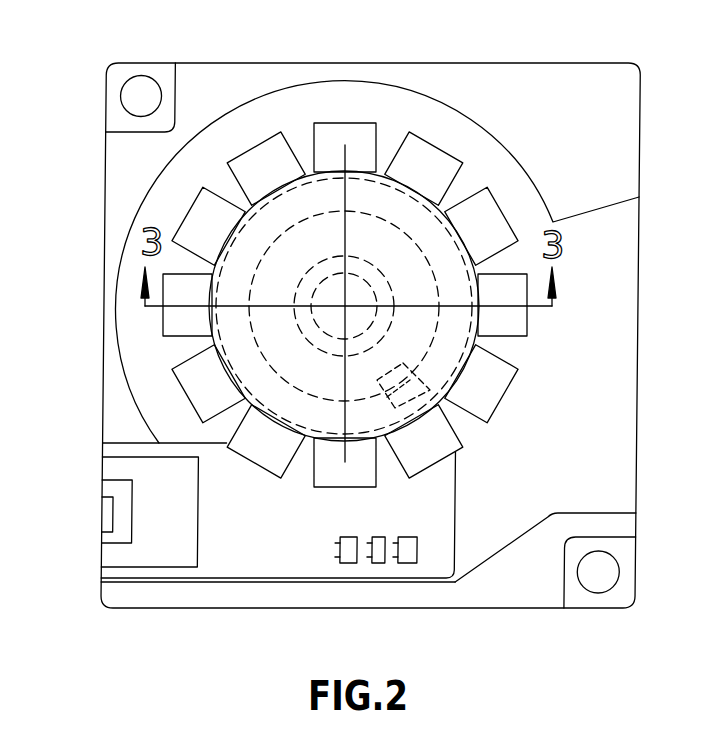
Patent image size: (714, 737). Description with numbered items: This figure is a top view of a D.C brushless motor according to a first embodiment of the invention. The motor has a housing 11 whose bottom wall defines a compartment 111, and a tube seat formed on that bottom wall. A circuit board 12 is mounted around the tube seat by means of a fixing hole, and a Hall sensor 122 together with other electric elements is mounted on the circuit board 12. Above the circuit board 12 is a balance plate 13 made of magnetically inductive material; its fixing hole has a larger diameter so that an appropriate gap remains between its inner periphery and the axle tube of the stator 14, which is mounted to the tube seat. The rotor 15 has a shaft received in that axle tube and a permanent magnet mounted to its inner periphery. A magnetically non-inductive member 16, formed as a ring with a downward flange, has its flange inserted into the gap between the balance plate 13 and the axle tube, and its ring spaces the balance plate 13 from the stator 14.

The housing 11 is at (106, 190).
The compartment 111 is at (510, 522).
The circuit board 12 is at (433, 558).
The Hall sensor 122 is at (377, 380).
The balance plate 13 is at (432, 205).
The stator 14 is at (336, 216).
The rotor 15 is at (383, 173).
The magnetically non-inductive member 16 is at (318, 272).